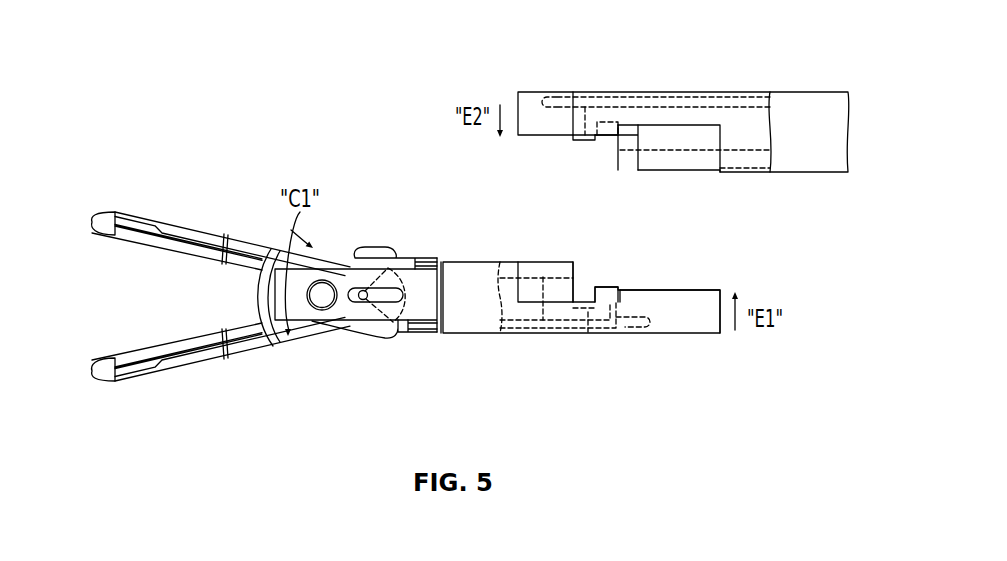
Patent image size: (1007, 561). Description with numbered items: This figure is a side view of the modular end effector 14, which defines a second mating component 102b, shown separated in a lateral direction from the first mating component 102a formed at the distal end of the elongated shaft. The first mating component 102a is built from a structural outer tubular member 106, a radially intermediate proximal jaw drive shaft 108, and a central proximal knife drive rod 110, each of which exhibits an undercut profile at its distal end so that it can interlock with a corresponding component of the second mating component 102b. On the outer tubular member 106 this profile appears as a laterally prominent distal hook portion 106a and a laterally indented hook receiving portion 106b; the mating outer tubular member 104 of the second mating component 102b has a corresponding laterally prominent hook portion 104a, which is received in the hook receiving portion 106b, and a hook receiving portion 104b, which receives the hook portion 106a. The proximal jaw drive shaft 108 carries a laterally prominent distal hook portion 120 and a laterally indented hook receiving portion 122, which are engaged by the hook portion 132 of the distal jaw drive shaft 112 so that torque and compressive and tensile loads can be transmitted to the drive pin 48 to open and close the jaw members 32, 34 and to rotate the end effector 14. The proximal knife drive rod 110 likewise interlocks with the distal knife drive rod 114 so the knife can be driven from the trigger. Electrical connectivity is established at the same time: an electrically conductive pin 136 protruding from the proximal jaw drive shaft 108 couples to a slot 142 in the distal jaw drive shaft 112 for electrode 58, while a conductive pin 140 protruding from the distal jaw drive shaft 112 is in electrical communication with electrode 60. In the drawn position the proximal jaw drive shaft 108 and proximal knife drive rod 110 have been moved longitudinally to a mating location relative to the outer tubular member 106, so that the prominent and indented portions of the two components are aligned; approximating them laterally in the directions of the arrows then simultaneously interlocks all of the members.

The end effector 14 is at (227, 195).
The jaw member 32 is at (132, 213).
The jaw member 34 is at (130, 383).
The electrode 58 is at (122, 248).
The electrode 60 is at (122, 347).
The drive pin 48 is at (365, 290).
The first mating component 102a is at (773, 87).
The second mating component 102b is at (713, 336).
The outer tubular member 104 is at (472, 330).
The hook portion 104a is at (712, 289).
The hook receiving portion 104b is at (568, 292).
The outer tubular member 106 is at (788, 157).
The distal hook portion 106a is at (520, 137).
The hook receiving portion 106b is at (638, 127).
The proximal jaw drive shaft 108 is at (700, 158).
The proximal knife drive rod 110 is at (650, 140).
The distal jaw drive shaft 112 is at (543, 283).
The distal knife drive rod 114 is at (587, 318).
The distal hook portion 120 is at (581, 142).
The hook receiving portion 122 is at (602, 144).
The hook portion 132 is at (610, 281).
The electrically conductive pin 136 is at (557, 92).
The electrically conductive pin 140 is at (625, 330).
The slot 142 is at (577, 254).